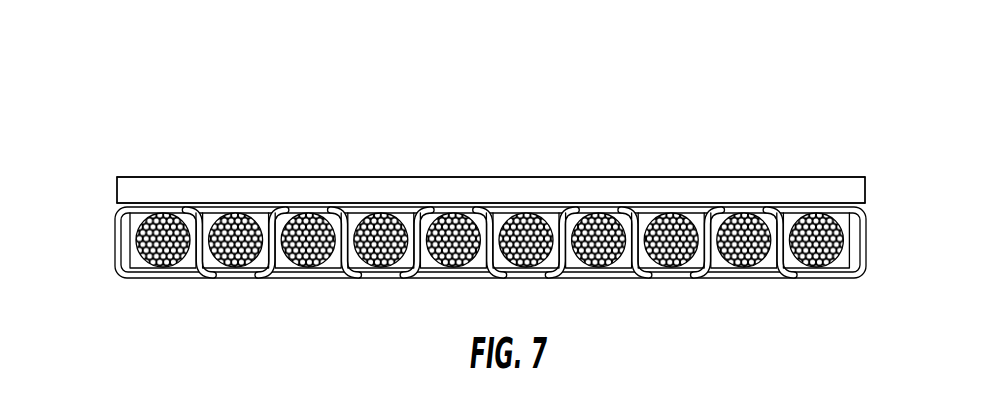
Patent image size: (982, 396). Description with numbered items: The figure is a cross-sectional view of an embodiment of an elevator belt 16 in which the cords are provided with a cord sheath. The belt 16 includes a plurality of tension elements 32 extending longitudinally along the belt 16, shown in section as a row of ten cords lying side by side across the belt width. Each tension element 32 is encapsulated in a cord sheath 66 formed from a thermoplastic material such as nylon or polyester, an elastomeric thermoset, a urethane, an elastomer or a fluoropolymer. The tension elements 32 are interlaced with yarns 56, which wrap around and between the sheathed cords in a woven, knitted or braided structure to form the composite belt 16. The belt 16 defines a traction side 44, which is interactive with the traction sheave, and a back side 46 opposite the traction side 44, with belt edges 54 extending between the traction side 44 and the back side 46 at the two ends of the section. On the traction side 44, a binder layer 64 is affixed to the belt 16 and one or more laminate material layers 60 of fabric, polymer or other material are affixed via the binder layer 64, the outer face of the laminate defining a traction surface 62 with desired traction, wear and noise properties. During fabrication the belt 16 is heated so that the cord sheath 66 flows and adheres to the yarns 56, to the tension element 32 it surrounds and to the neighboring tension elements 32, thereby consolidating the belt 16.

The belt 16 is at (507, 196).
The tension elements 32 is at (489, 217).
The traction side 44 is at (491, 131).
The back side 46 is at (673, 280).
The belt edges 54 is at (120, 239).
The yarns 56 is at (455, 208).
The laminate material layers 60 is at (592, 185).
The traction surface 62 is at (717, 177).
The binder layer 64 is at (668, 200).
The cord sheath 66 is at (315, 263).